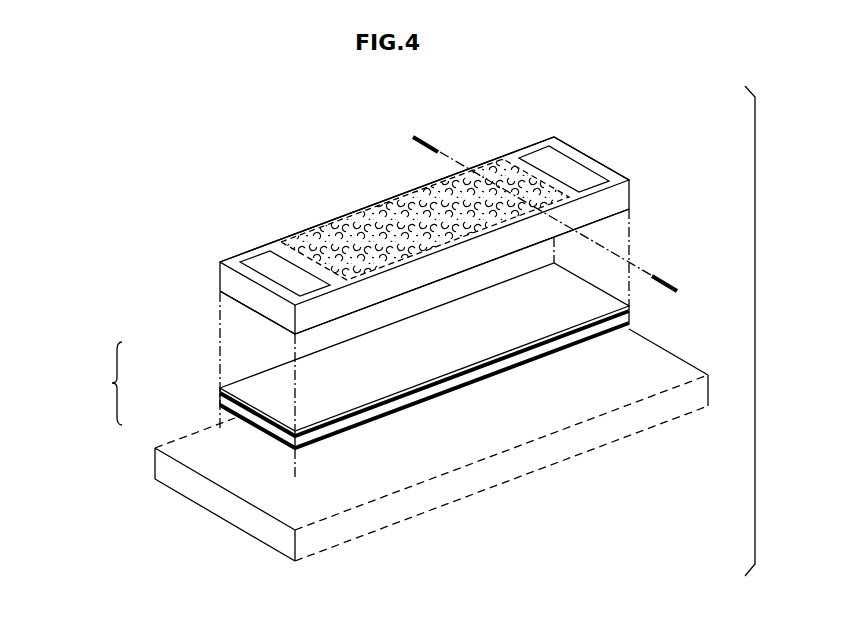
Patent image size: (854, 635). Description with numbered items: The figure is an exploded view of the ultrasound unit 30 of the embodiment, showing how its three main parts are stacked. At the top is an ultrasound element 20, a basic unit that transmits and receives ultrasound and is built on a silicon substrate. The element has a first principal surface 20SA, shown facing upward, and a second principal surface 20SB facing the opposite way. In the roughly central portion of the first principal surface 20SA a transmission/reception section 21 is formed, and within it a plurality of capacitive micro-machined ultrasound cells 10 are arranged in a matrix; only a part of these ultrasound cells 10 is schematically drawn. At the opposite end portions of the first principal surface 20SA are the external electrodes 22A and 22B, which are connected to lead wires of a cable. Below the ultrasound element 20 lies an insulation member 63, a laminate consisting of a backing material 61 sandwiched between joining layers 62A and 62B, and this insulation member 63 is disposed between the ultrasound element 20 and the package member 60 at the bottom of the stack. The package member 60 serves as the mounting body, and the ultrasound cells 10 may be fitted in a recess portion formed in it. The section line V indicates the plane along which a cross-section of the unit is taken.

The capacitive micro-machined ultrasound cell 10 is at (408, 188).
The ultrasound element 20 is at (221, 261).
The first principal surface 20SA is at (355, 232).
The second principal surface 20SB is at (242, 305).
The transmission/reception section 21 is at (309, 219).
The external electrode 22A is at (256, 248).
The external electrode 22B is at (543, 142).
The ultrasound unit 30 is at (183, 152).
The package member 60 is at (155, 476).
The backing material 61 is at (220, 398).
The joining layer 62A is at (220, 390).
The joining layer 62B is at (220, 404).
The insulation member 63 is at (356, 377).
The section line V- V is at (427, 140).